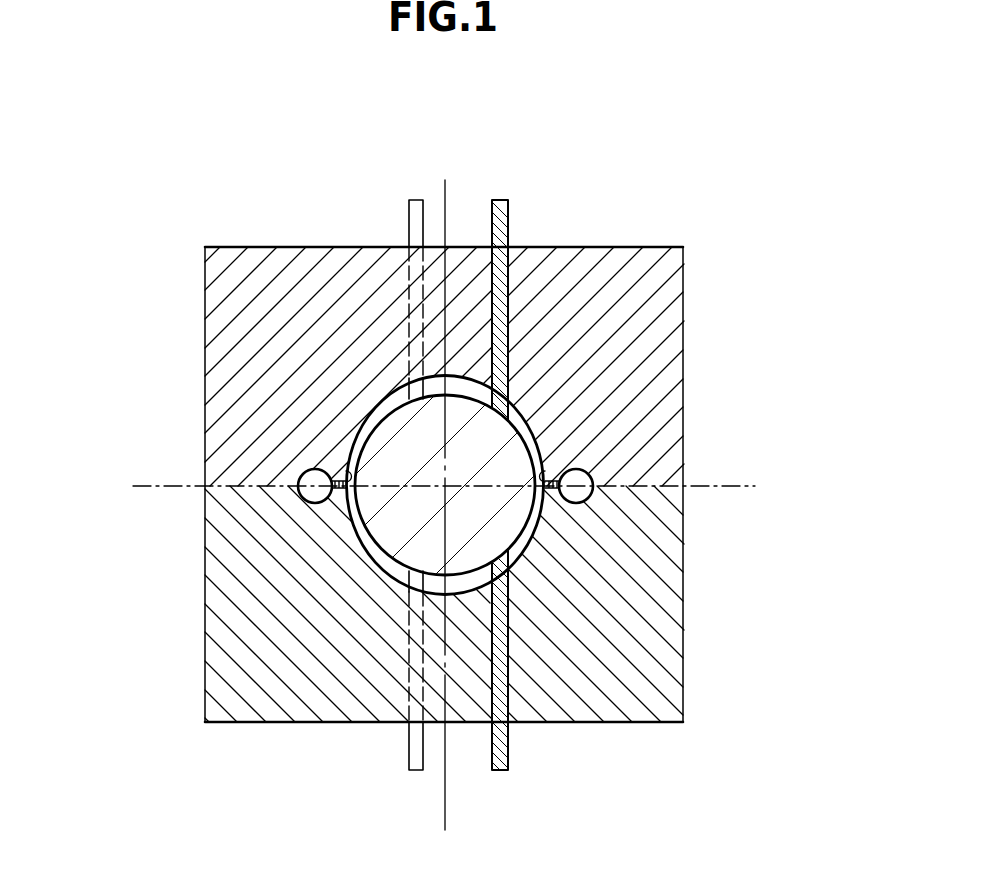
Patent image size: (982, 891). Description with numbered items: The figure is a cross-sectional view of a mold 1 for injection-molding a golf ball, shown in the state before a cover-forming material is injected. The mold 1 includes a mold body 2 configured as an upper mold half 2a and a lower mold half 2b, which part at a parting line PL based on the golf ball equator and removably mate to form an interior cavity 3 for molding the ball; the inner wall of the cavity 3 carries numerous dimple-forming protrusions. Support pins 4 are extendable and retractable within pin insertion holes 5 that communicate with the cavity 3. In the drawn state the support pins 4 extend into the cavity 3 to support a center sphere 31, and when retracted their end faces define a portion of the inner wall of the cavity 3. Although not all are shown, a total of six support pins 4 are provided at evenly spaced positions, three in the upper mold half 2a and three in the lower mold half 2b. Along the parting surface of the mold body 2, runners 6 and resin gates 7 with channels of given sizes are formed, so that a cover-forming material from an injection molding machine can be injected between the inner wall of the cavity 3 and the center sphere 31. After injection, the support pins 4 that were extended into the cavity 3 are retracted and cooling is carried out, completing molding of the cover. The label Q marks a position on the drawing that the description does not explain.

The mold 1 is at (190, 173).
The mold body 2 is at (484, 455).
The upper mold half 2a is at (672, 345).
The lower mold half 2b is at (672, 580).
The interior cavity 3 is at (372, 548).
The center sphere 31 is at (403, 447).
The support pins 4 is at (500, 200).
The pin insertion holes 5 is at (522, 652).
The runners 6 is at (310, 494).
The resin gates 7 is at (347, 466).
The parting line PL is at (162, 484).
The pin position Q is at (432, 385).